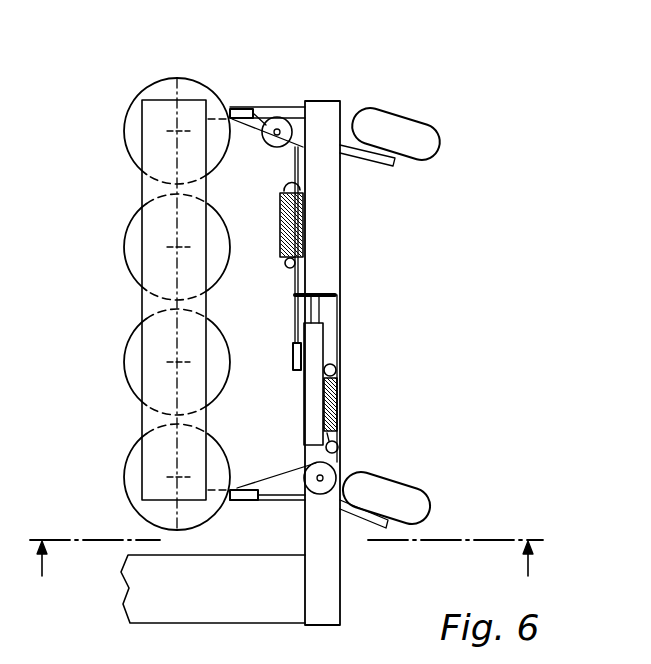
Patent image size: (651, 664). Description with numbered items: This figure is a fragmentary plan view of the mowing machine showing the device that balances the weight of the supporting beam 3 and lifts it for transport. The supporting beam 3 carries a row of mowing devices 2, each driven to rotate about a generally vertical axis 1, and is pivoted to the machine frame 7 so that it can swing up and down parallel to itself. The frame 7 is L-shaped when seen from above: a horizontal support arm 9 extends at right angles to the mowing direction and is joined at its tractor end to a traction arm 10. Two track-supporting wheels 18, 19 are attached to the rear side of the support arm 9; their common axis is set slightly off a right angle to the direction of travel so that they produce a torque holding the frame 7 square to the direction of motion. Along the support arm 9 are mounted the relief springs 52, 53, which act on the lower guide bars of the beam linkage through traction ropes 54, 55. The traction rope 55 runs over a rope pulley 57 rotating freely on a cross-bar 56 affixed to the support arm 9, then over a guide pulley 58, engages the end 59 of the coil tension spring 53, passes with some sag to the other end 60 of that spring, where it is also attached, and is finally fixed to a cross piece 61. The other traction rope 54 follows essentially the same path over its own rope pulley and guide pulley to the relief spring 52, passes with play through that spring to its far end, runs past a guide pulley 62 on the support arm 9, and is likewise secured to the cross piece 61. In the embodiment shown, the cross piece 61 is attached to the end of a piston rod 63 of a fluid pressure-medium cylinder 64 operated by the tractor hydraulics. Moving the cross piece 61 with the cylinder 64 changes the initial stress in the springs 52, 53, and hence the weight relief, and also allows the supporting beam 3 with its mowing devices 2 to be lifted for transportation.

The generally vertical axis 1 is at (177, 247).
The mowing device 2 is at (128, 385).
The supporting beam 3 is at (140, 190).
The machine frame 7 is at (372, 272).
The support arm 9 is at (343, 256).
The traction arm 10 is at (170, 600).
The track-supporting wheel 18 is at (420, 138).
The track-supporting wheel 19 is at (418, 493).
The relief spring 52 is at (283, 221).
The relief spring 53 is at (331, 425).
The traction rope 54 is at (270, 116).
The traction rope 55 is at (268, 501).
The cross-bar 56 is at (271, 486).
The rope pulley 57 is at (231, 487).
The guide pulley 58 is at (323, 483).
The end of spring 59 is at (338, 449).
The other end of spring 60 is at (336, 370).
The cross piece 61 is at (327, 294).
The guide pulley 62 is at (293, 363).
The piston rod 63 is at (317, 318).
The fluid pressure-medium cylinder 64 is at (311, 407).